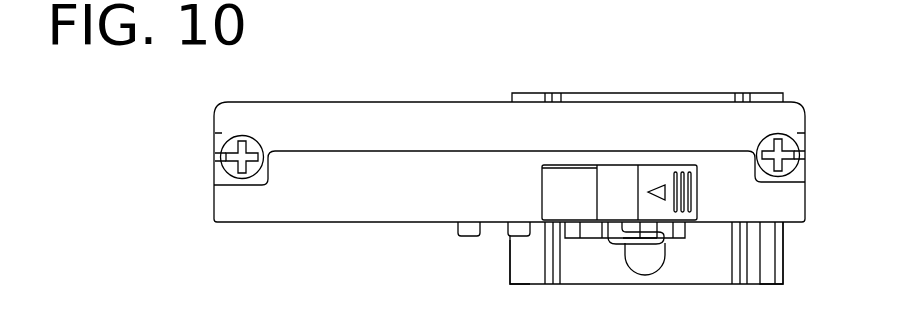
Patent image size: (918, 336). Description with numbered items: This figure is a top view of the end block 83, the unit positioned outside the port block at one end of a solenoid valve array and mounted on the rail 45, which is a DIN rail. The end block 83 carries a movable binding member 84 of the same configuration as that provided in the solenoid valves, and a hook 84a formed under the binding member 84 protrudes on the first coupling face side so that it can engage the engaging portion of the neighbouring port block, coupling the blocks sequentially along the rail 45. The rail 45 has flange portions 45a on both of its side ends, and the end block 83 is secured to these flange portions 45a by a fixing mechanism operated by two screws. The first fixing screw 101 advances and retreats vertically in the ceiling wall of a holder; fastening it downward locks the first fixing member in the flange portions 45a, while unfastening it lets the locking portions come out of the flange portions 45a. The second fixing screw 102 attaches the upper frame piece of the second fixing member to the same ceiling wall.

The end block 83 is at (342, 28).
The movable binding member 84 is at (657, 176).
The hook 84a is at (646, 245).
The rail 45 is at (692, 274).
The flange portions 45a is at (528, 272).
The first fixing screw 101 is at (220, 147).
The second fixing screw 102 is at (796, 147).